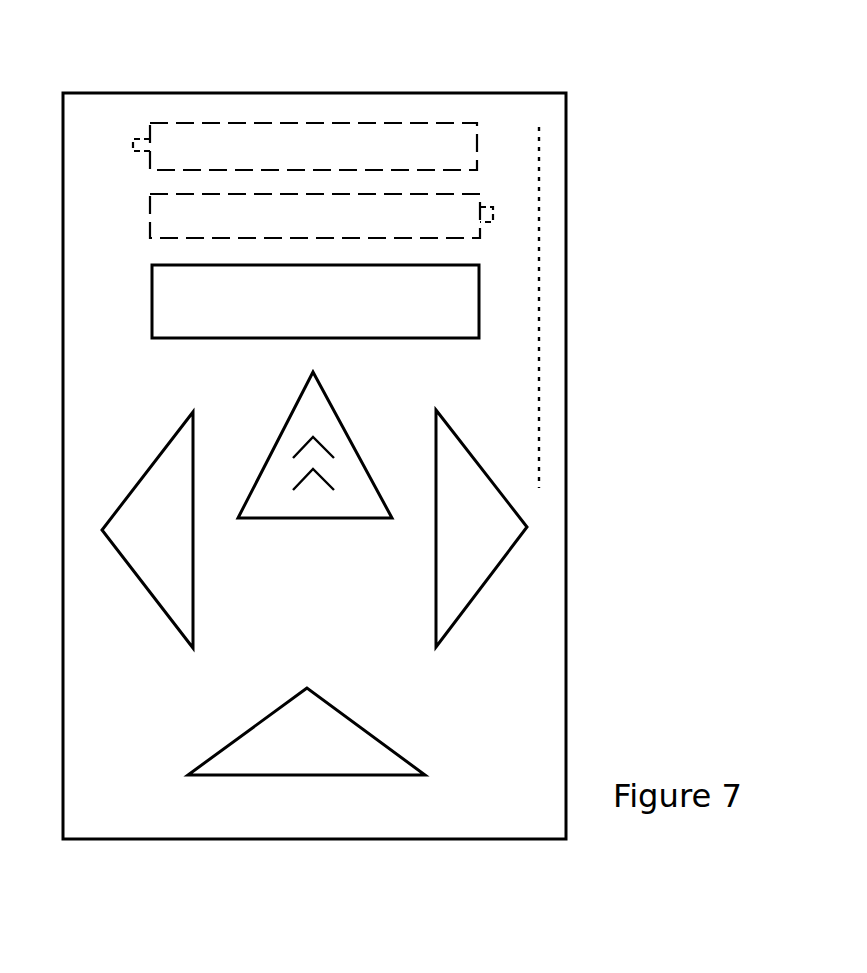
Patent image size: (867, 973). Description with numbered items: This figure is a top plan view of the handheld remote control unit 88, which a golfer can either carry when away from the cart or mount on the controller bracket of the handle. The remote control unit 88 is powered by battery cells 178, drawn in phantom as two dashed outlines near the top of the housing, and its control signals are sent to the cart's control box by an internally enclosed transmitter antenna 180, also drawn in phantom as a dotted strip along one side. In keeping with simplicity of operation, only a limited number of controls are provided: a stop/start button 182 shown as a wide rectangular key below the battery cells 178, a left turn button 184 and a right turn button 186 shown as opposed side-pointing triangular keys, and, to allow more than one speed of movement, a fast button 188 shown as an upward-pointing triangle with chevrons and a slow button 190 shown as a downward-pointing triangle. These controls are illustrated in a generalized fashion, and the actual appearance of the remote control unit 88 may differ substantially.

The remote control unit 88 is at (628, 193).
The battery cells 178 is at (328, 147).
The transmitter antenna 180 is at (539, 412).
The stop/start button 182 is at (327, 315).
The left turn button 184 is at (171, 547).
The right turn button 186 is at (487, 545).
The fast button 188 is at (282, 520).
The slow button 190 is at (367, 759).